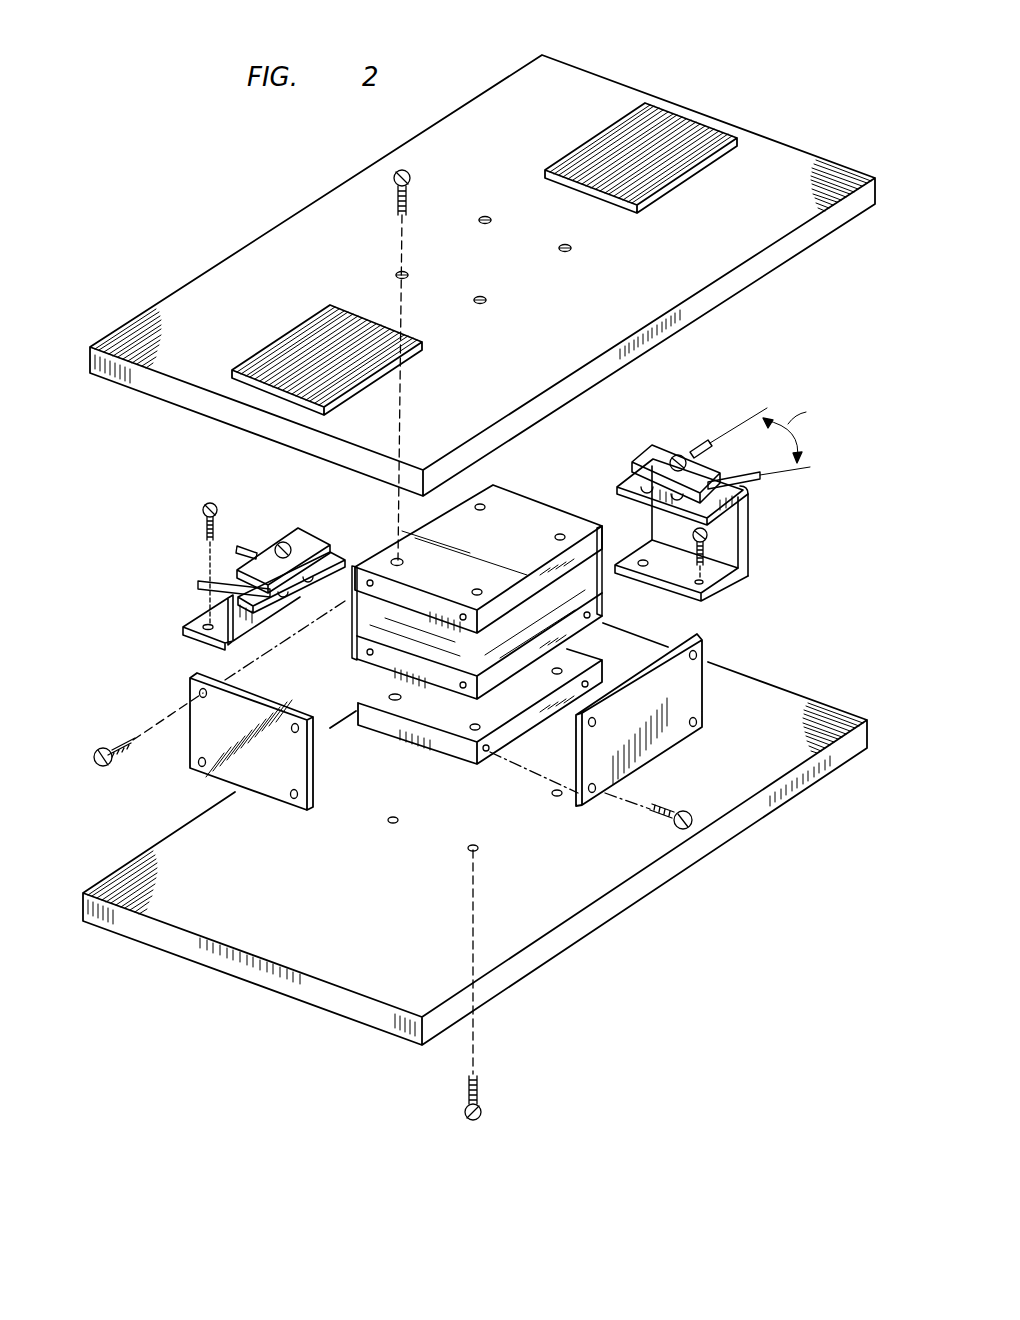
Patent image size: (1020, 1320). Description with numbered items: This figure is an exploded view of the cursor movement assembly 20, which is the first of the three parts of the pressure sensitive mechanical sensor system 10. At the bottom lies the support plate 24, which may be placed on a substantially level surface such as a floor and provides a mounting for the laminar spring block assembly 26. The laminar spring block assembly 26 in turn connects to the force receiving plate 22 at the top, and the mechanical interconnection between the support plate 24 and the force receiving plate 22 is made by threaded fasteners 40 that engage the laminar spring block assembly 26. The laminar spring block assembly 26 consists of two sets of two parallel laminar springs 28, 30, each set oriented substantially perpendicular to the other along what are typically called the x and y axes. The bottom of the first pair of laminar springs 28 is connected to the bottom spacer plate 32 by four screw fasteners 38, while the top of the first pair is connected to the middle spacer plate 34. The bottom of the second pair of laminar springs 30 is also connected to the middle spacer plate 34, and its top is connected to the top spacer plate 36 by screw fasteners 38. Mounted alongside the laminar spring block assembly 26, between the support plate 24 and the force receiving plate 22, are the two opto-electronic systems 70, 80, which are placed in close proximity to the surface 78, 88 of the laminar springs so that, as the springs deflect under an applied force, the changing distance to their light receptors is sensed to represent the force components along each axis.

The pressure sensitive mechanical sensor system 10 is at (622, 70).
The cursor movement assembly 20 is at (720, 116).
The force receiving plate 22 is at (789, 244).
The support plate 24 is at (750, 688).
The laminar spring block assembly 26 is at (497, 778).
The first pair of laminar springs 28 is at (698, 706).
The second pair of laminar springs 30 is at (190, 683).
The bottom spacer plate 32 is at (443, 746).
The middle spacer plate 34 is at (437, 680).
The top spacer plate 36 is at (521, 522).
The screw fasteners 38 is at (95, 760).
The threaded fasteners 40 is at (412, 180).
The first opto-electronic system 70 is at (765, 525).
The surface of laminar spring 78 is at (605, 584).
The second opto-electronic system 80 is at (183, 598).
The surface of laminar spring 88 is at (350, 630).